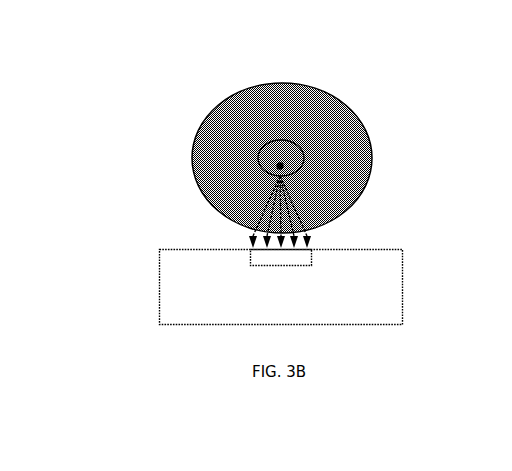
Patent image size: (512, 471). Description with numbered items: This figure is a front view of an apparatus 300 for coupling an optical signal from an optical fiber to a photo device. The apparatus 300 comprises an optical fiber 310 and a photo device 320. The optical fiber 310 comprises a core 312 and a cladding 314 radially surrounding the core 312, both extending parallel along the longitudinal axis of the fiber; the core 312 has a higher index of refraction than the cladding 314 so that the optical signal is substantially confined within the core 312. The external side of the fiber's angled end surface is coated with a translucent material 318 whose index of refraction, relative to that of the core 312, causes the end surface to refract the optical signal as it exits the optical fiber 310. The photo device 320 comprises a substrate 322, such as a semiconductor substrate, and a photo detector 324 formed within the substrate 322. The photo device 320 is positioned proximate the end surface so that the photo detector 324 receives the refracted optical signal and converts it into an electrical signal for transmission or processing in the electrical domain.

The apparatus 300 is at (421, 72).
The optical fiber 310 is at (219, 92).
The core 312 is at (292, 150).
The cladding 314 is at (208, 167).
The translucent material 318 is at (293, 118).
The photo device 320 is at (395, 245).
The substrate 322 is at (378, 288).
The photo detector 324 is at (283, 266).